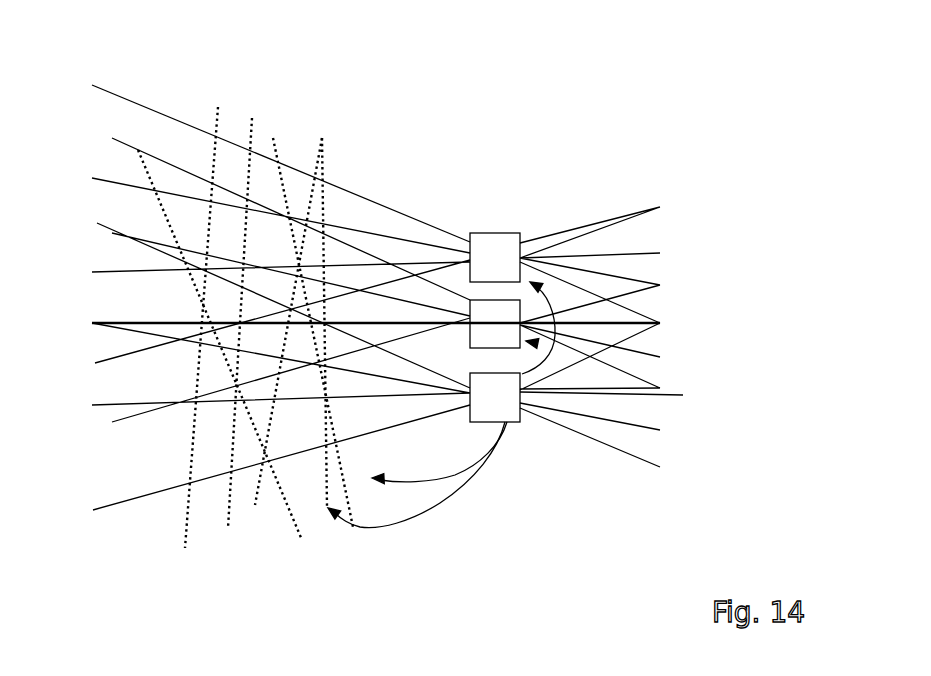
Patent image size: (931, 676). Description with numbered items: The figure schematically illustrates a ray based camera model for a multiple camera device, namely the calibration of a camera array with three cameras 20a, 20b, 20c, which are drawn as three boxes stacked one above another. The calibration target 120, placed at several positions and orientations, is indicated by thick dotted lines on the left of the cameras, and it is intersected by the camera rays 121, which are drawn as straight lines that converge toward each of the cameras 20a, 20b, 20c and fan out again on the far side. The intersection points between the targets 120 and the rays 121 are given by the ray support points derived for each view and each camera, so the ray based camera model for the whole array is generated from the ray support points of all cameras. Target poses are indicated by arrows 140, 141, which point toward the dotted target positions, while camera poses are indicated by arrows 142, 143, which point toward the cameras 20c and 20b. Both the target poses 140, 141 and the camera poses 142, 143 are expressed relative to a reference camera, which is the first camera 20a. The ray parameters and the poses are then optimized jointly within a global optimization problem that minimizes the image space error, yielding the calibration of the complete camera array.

The first camera 20a is at (521, 420).
The camera 20b is at (506, 318).
The camera 20c is at (494, 241).
The calibration target 120 is at (383, 206).
The camera rays 121 is at (228, 105).
The arrow indicating target pose 140 is at (450, 477).
The arrow indicating target pose 141 is at (380, 530).
The arrow indicating camera pose 142 is at (557, 300).
The arrow indicating camera pose 143 is at (532, 341).